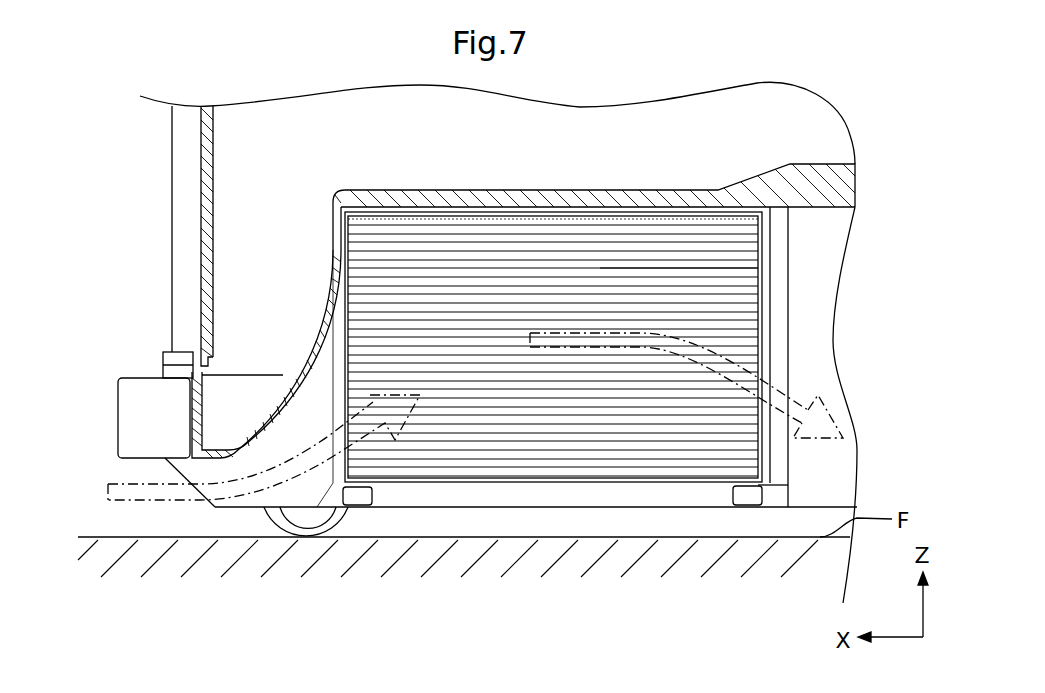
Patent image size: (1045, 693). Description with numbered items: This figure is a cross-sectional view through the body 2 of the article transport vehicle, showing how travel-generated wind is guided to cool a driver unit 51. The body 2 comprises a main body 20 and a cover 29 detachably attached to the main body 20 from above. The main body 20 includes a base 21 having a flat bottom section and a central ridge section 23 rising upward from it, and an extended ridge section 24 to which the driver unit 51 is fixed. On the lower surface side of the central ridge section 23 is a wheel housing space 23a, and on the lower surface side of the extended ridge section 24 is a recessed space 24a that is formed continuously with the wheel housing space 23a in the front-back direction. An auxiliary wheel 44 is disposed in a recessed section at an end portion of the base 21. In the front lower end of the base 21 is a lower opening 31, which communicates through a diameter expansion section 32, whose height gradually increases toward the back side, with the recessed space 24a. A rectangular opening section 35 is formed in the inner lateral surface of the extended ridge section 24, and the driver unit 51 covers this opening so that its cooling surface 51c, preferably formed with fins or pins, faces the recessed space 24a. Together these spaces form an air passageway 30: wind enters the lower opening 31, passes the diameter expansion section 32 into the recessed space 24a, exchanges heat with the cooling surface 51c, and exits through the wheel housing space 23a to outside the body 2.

The body 2 is at (136, 68).
The cover 29 is at (172, 175).
The main body 20 is at (115, 366).
The base 21 is at (130, 428).
The lower opening 31 is at (183, 508).
The auxiliary wheel 44 is at (280, 520).
The diameter expansion section 32 is at (298, 425).
The opening section 35 is at (393, 222).
The extended ridge section 24 is at (515, 197).
The driver unit 51 is at (655, 225).
The central ridge section 23 is at (835, 160).
The cooling surface 51c is at (725, 265).
The wheel housing space 23a is at (823, 456).
The air passageway 30 is at (482, 405).
The recessed space 24a is at (603, 417).